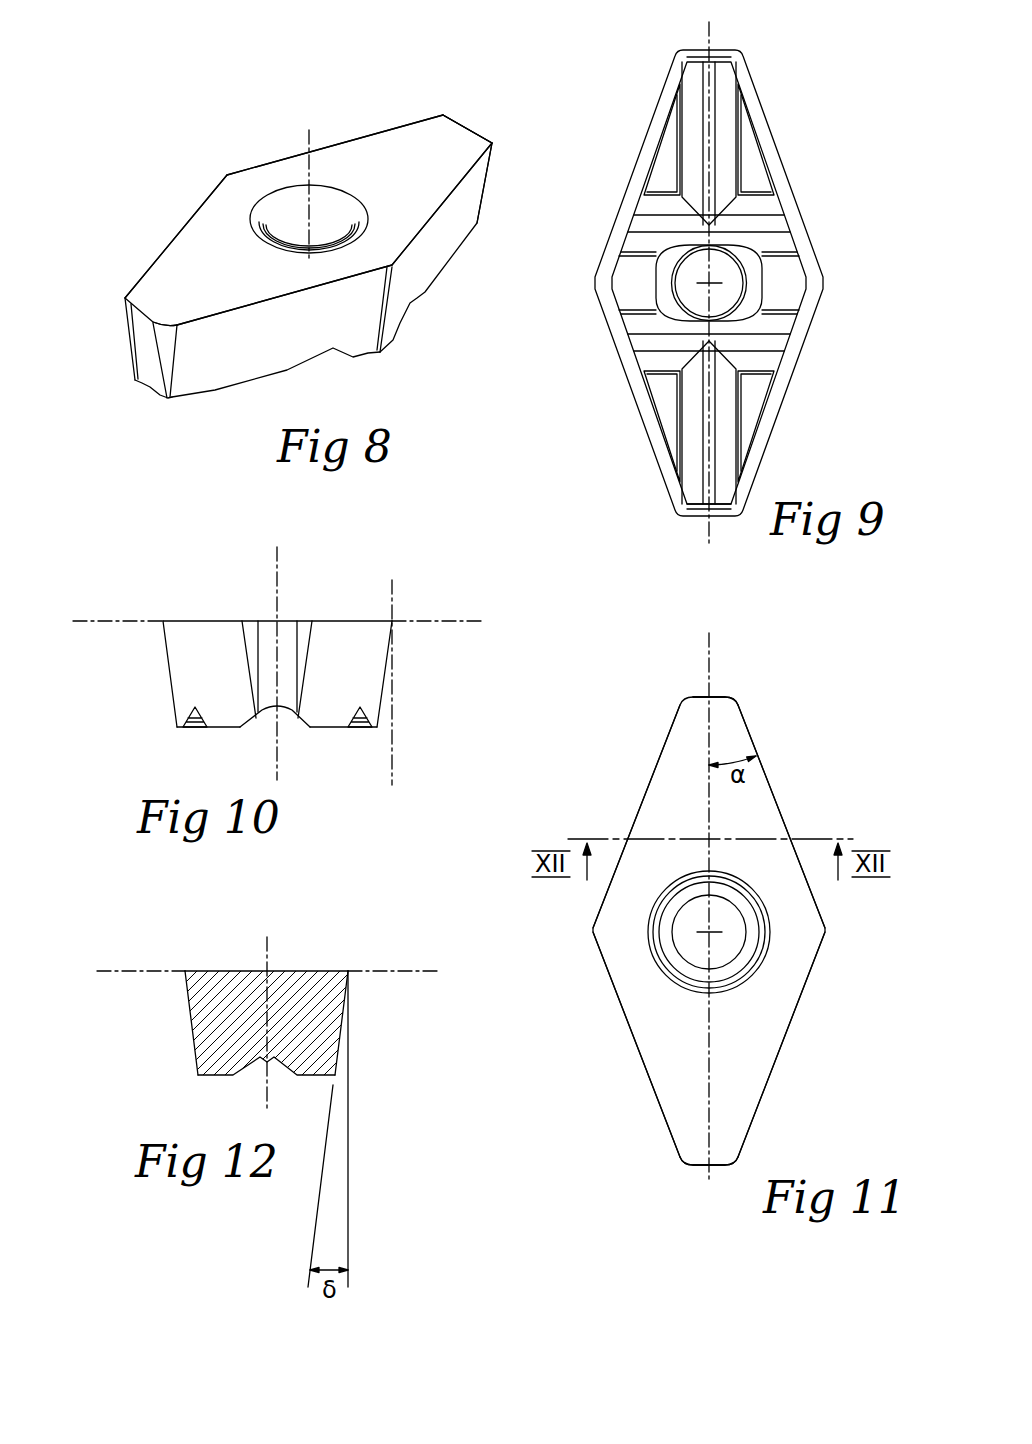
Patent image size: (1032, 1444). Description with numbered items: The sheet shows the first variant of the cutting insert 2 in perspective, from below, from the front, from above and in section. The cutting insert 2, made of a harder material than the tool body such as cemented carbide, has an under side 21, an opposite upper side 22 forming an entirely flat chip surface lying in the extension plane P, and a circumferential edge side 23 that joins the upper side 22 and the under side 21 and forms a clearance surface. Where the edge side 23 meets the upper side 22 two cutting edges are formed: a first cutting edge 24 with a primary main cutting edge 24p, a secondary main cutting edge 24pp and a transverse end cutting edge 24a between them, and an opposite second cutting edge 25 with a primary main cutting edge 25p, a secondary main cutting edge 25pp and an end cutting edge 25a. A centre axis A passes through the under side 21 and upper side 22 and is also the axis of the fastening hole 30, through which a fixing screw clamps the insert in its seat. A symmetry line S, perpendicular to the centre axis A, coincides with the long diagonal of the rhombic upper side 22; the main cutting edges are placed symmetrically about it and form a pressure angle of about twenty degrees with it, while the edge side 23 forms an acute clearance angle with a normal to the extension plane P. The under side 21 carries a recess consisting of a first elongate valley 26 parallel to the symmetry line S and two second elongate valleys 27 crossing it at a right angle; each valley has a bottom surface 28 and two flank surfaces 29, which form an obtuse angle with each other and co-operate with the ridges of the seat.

In FIG. 8, the cutting insert 2 is at (286, 244).
In FIG. 10, the under side 21 is at (227, 728).
In FIG. 12, the under side 21 is at (220, 1075).
In FIG. 8, the upper side 22 is at (215, 225).
In FIG. 10, the upper side 22 is at (232, 620).
In FIG. 12, the upper side 22 is at (307, 971).
In FIG. 11, the upper side 22 is at (648, 1022).
In FIG. 8, the edge side 23 is at (257, 359).
In FIG. 12, the edge side 23 is at (185, 1007).
In FIG. 8, the first cutting edge 24 is at (150, 326).
In FIG. 11, the first cutting edge 24 is at (722, 1182).
In FIG. 8, the end cutting edge 24a is at (131, 323).
In FIG. 10, the end cutting edge 24a is at (285, 622).
In FIG. 11, the end cutting edge 24a is at (693, 1166).
In FIG. 8, the primary main cutting edge 24p is at (225, 312).
In FIG. 10, the primary main cutting edge 24p is at (393, 622).
In FIG. 11, the primary main cutting edge 24p is at (772, 1077).
In FIG. 8, the secondary main cutting edge 24pp is at (141, 276).
In FIG. 10, the secondary main cutting edge 24pp is at (163, 622).
In FIG. 11, the secondary main cutting edge 24pp is at (658, 1112).
In FIG. 8, the second cutting edge 25 is at (483, 124).
In FIG. 11, the second cutting edge 25 is at (730, 688).
In FIG. 8, the end cutting edge 25a is at (465, 114).
In FIG. 11, the end cutting edge 25a is at (697, 697).
In FIG. 8, the primary main cutting edge 25p is at (343, 137).
In FIG. 11, the primary main cutting edge 25p is at (653, 762).
In FIG. 8, the secondary main cutting edge 25pp is at (447, 203).
In FIG. 11, the secondary main cutting edge 25pp is at (767, 763).
In FIG. 9, the first elongate valley 26 is at (707, 456).
In FIG. 10, the first elongate valley 26 is at (292, 727).
In FIG. 9, the second elongate valley 27 is at (772, 227).
In FIG. 9, the bottom surface 28 is at (713, 86).
In FIG. 9, the flank surface 29 is at (730, 134).
In FIG. 8, the fastening hole 30 is at (295, 230).
In FIG. 9, the fastening hole 30 is at (690, 294).
In FIG. 11, the fastening hole 30 is at (683, 928).
In FIG. 9, the centre axis A is at (711, 273).
In FIG. 10, the centre axis A is at (277, 562).
In FIG. 11, the centre axis A is at (709, 932).
In FIG. 9, the symmetry line S is at (709, 40).
In FIG. 11, the symmetry line S is at (709, 662).
In FIG. 10, the extension plane P is at (85, 621).
In FIG. 12, the extension plane P is at (107, 971).